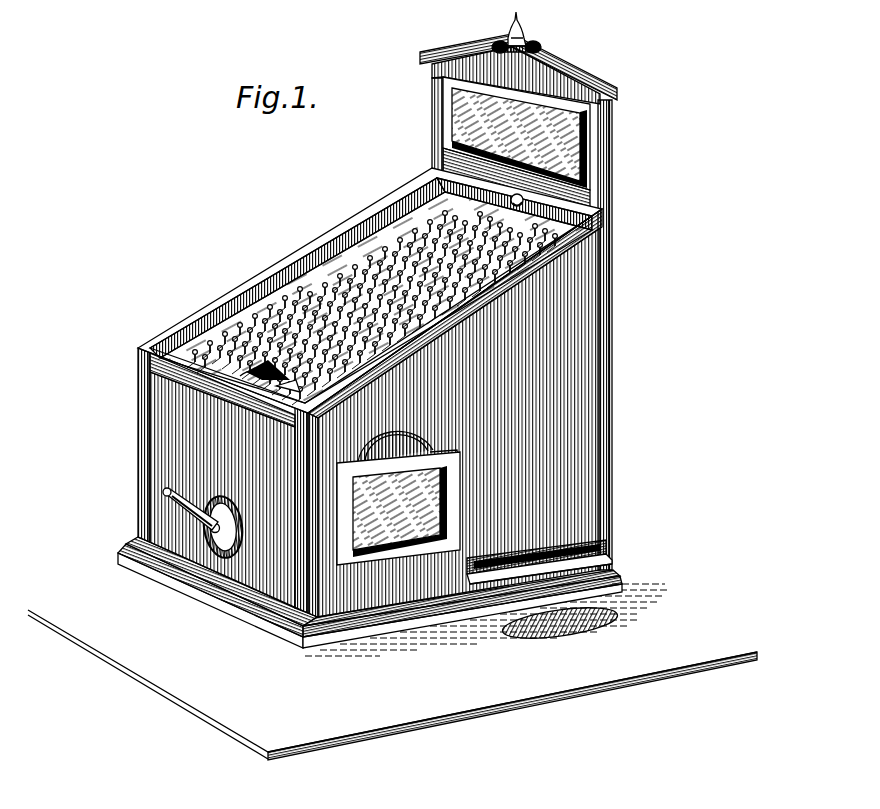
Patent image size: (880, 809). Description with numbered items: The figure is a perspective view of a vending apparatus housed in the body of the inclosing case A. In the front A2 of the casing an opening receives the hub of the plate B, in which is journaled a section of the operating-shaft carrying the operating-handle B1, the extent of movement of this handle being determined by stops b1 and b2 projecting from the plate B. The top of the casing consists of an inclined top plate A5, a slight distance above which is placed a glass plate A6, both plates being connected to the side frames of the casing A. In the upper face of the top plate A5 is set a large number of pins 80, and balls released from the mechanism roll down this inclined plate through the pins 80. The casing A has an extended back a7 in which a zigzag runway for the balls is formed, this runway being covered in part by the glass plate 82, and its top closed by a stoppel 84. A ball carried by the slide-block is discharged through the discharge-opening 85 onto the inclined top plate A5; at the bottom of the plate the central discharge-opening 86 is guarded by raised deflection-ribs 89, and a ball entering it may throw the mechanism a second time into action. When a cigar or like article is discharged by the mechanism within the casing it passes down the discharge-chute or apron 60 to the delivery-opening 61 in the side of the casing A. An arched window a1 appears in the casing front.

The body of the inclosing case A is at (369, 358).
The front of the casing A2 is at (280, 452).
The top plate A5 is at (466, 236).
The glass plate A6 is at (394, 206).
The arched window a1 is at (430, 447).
The extended back a7 is at (613, 118).
The plate B is at (233, 530).
The operating-handle B1 is at (163, 497).
The stop b1 is at (211, 521).
The stop b2 is at (230, 543).
The discharge-chute or apron 60 is at (492, 582).
The delivery-opening 61 is at (612, 553).
The pins 80 is at (392, 270).
The glass plate 82 is at (587, 151).
The stoppel 84 is at (525, 26).
The discharge-opening 85 is at (516, 207).
The discharge-opening 86 is at (256, 372).
The deflection-ribs 89 is at (272, 374).